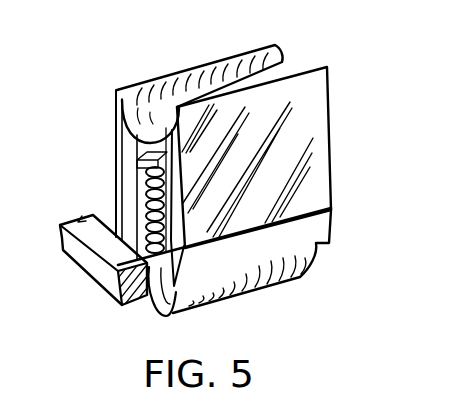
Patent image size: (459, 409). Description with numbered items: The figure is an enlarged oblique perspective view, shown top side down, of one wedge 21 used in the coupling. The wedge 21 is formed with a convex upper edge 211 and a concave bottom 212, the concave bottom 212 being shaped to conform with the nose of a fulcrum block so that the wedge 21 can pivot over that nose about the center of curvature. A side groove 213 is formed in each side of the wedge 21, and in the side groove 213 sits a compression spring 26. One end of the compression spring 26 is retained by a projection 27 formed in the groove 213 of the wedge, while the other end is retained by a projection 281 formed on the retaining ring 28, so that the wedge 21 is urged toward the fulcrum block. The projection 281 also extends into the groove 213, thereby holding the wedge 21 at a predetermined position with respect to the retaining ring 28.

The wedge 21 is at (333, 138).
The convex upper edge 211 is at (268, 296).
The concave bottom 212 is at (281, 63).
The side groove 213 is at (180, 306).
The compression spring 26 is at (147, 192).
The projection 27 is at (142, 157).
The retaining ring 28 is at (83, 283).
The projection 281 is at (153, 312).